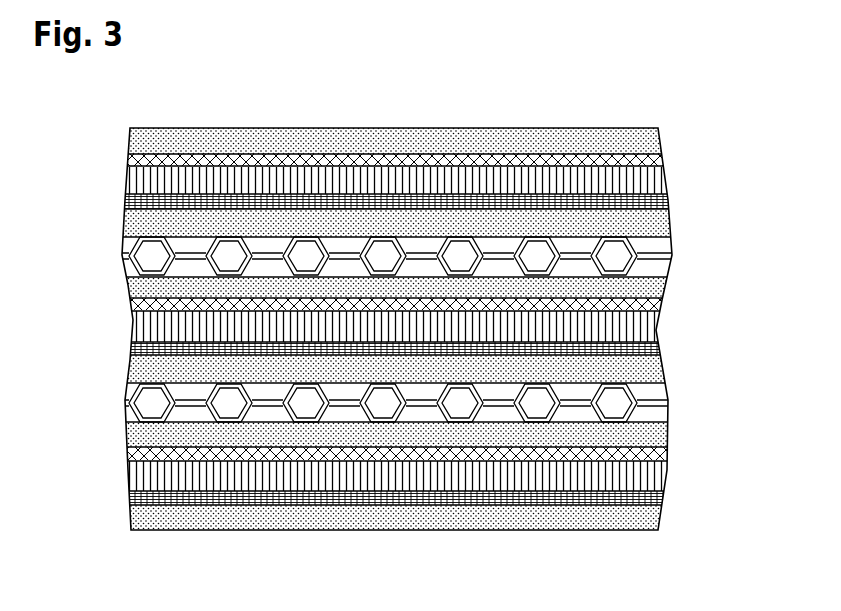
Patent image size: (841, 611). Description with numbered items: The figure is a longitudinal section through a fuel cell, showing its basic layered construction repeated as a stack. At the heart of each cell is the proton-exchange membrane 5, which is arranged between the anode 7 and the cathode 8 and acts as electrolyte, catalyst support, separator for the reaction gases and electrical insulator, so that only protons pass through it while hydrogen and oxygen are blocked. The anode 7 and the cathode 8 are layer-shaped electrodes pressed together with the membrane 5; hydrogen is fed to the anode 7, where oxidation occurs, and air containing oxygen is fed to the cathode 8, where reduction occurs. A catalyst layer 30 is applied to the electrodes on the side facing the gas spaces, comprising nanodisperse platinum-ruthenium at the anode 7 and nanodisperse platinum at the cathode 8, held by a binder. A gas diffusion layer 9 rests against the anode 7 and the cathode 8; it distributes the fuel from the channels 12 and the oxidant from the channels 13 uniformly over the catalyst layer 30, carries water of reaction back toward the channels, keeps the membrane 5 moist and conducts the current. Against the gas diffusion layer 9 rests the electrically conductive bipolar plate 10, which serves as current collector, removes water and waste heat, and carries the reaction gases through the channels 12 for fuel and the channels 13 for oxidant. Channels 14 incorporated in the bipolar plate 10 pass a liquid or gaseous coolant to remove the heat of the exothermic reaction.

The proton-exchange membrane 5 is at (653, 477).
The anode 7 is at (664, 451).
The cathode 8 is at (657, 501).
The gas diffusion layer 9 is at (131, 518).
The bipolar plate 10 is at (648, 393).
The channels for fuel 12 is at (503, 413).
The channels for oxidant 13 is at (578, 390).
The channels for coolant 14 is at (540, 402).
The catalyst layer 30 is at (128, 490).